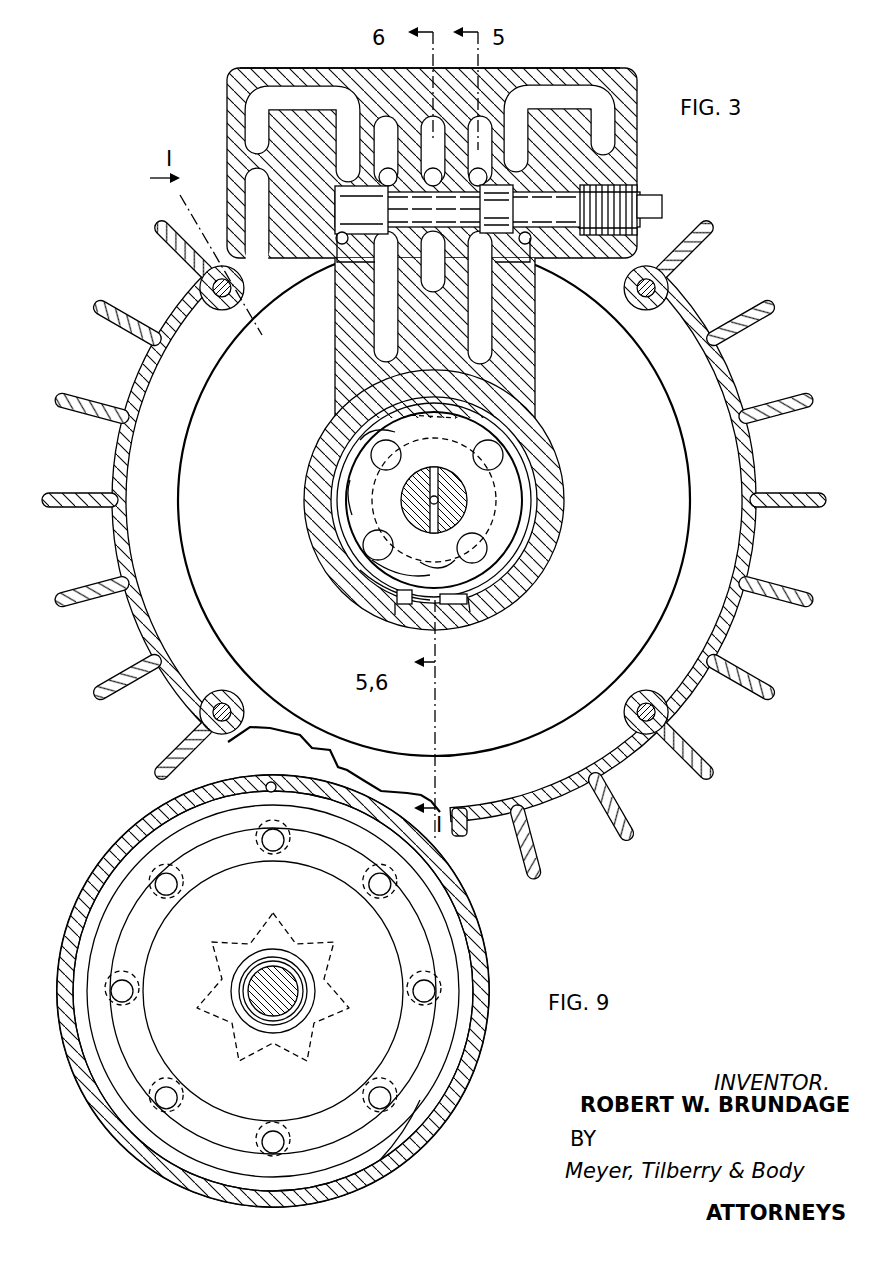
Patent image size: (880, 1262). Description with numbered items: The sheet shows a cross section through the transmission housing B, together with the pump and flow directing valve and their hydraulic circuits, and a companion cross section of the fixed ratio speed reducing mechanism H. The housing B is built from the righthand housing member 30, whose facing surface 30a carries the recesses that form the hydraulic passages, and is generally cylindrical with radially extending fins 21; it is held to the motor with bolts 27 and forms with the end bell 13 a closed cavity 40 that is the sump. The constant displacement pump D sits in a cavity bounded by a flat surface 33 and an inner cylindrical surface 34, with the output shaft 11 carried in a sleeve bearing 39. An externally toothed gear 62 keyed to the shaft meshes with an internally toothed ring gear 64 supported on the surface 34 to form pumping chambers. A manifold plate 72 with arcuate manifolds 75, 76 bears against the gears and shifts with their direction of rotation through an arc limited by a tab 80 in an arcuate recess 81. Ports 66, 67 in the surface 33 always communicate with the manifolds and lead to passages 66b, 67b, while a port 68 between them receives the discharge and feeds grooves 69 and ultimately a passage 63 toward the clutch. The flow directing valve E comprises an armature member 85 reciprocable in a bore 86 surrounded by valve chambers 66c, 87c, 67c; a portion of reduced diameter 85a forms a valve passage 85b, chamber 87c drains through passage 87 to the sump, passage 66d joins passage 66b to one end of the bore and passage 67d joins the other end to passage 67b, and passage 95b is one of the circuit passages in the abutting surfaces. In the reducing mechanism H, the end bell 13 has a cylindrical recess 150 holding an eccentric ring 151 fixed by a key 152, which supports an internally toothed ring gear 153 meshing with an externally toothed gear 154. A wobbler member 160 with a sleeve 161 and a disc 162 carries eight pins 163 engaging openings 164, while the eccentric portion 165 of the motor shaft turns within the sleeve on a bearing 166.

In FIG. 3, the housing B is at (274, 64).
In FIG. 3, the righthand housing member 30 is at (340, 67).
In FIG. 3, the right facing surface 30a is at (233, 128).
In FIG. 3, the passage 95b is at (565, 94).
In FIG. 3, the valve chamber 87c is at (435, 137).
In FIG. 3, the valve chamber 67c is at (472, 140).
In FIG. 3, the valve chamber 66c is at (398, 160).
In FIG. 3, the bore 86 is at (575, 170).
In FIG. 3, the flow directing valve E is at (508, 196).
In FIG. 3, the portion of reduced diameter 85a is at (487, 209).
In FIG. 3, the armature member 85 is at (515, 212).
In FIG. 3, the valve passage 85b is at (342, 262).
In FIG. 3, the radially extending fins 21 is at (740, 318).
In FIG. 3, the bolts 27 is at (658, 287).
In FIG. 3, the passage 66d is at (345, 280).
In FIG. 3, the passage 87 is at (441, 290).
In FIG. 3, the passage 67d is at (536, 287).
In FIG. 3, the passage 67b is at (491, 347).
In FIG. 3, the passage 66b is at (387, 328).
In FIG. 3, the port 68 is at (495, 398).
In FIG. 3, the internally toothed ring gear 64 is at (345, 440).
In FIG. 3, the grooves 69 is at (432, 428).
In FIG. 3, the externally toothed gear 62 is at (350, 447).
In FIG. 3, the port 67 is at (520, 468).
In FIG. 3, the port 66 is at (330, 470).
In FIG. 3, the arcuate manifold 76 is at (512, 492).
In FIG. 3, the sleeve bearing 39 is at (470, 500).
In FIG. 3, the constant displacement pump D is at (562, 512).
In FIG. 3, the passage 63 is at (345, 522).
In FIG. 3, the flat surface 33 is at (542, 545).
In FIG. 3, the arcuate manifold 75 is at (372, 560).
In FIG. 3, the output shaft 11 is at (428, 598).
In FIG. 3, the inner cylindrical surface 34 is at (532, 572).
In FIG. 3, the manifold plate 72 is at (372, 570).
In FIG. 3, the tab 80 is at (400, 616).
In FIG. 3, the arcuate recess 81 is at (446, 628).
In FIG. 3, the cavity 40 is at (655, 612).
In FIG. 9, the key 152 is at (272, 782).
In FIG. 9, the end bell 13 is at (146, 813).
In FIG. 9, the wobbler member 160 is at (140, 893).
In FIG. 9, the openings 164 is at (376, 865).
In FIG. 9, the internally toothed ring gear 153 is at (238, 920).
In FIG. 9, the pins 163 is at (378, 895).
In FIG. 9, the cylindrical recess 150 is at (450, 966).
In FIG. 9, the bearing 166 is at (250, 1000).
In FIG. 9, the externally toothed gear 154 is at (337, 1005).
In FIG. 9, the disc 162 is at (160, 1047).
In FIG. 9, the eccentric portion 165 is at (266, 1010).
In FIG. 9, the sleeve 161 is at (296, 1030).
In FIG. 9, the eccentric ring 151 is at (480, 1046).
In FIG. 9, the fixed ratio speed reducing mechanism H is at (472, 1092).